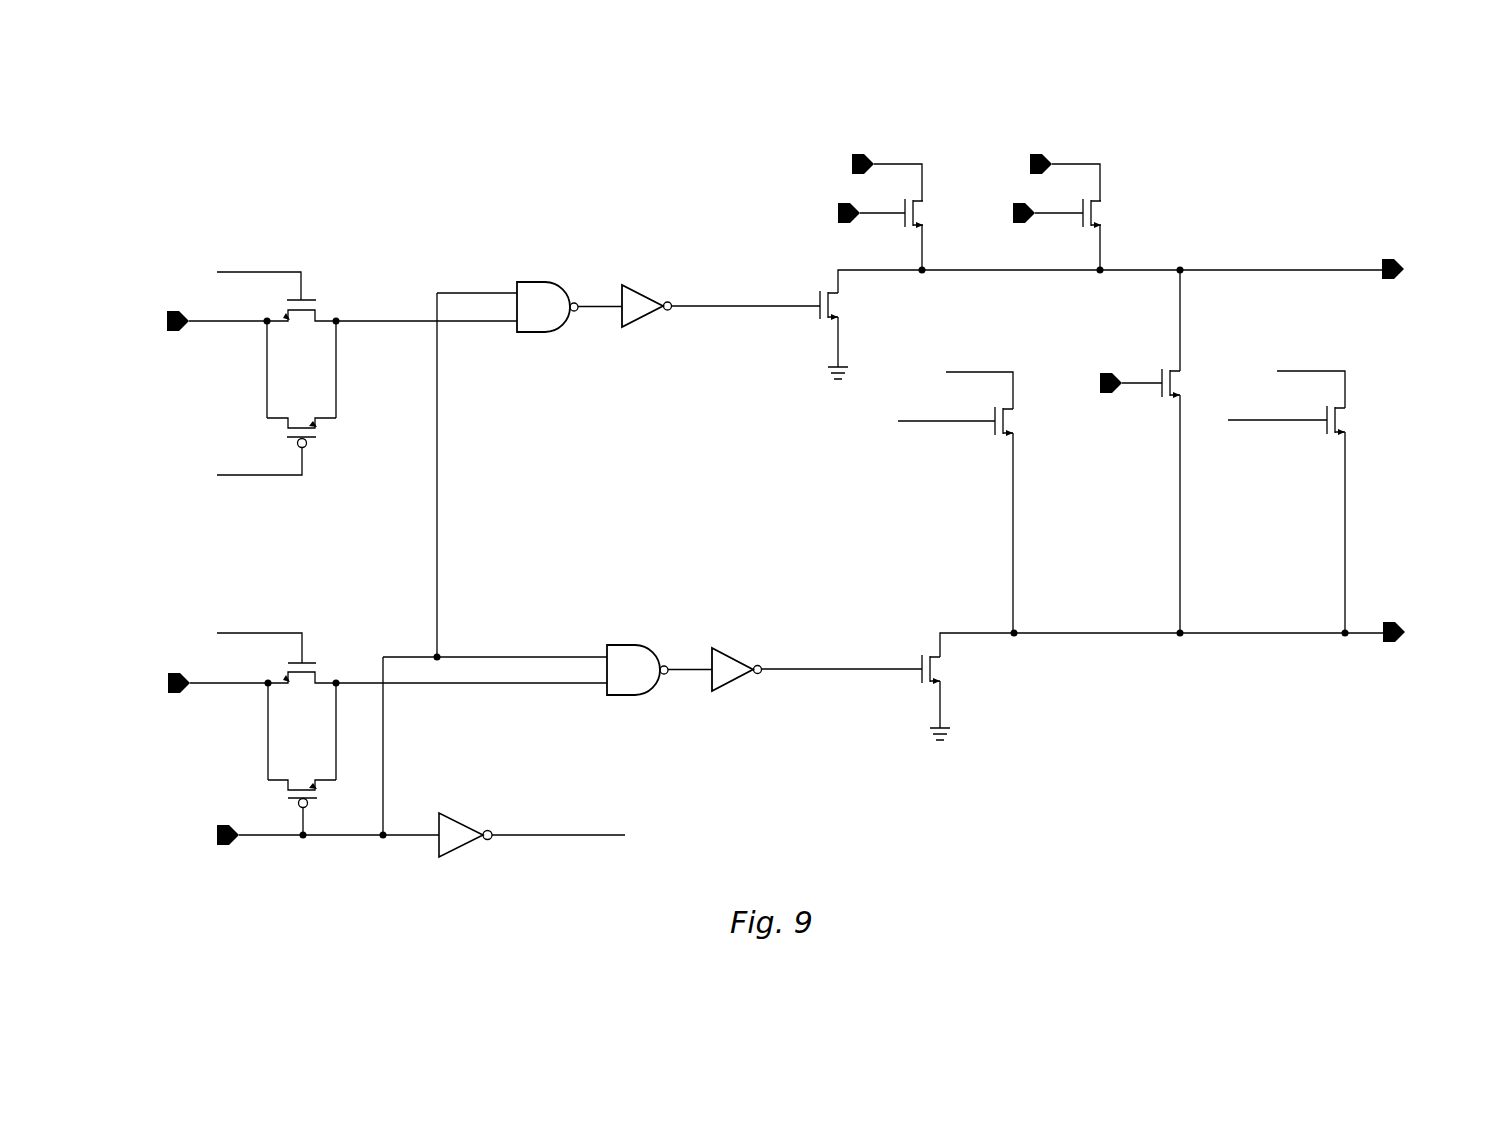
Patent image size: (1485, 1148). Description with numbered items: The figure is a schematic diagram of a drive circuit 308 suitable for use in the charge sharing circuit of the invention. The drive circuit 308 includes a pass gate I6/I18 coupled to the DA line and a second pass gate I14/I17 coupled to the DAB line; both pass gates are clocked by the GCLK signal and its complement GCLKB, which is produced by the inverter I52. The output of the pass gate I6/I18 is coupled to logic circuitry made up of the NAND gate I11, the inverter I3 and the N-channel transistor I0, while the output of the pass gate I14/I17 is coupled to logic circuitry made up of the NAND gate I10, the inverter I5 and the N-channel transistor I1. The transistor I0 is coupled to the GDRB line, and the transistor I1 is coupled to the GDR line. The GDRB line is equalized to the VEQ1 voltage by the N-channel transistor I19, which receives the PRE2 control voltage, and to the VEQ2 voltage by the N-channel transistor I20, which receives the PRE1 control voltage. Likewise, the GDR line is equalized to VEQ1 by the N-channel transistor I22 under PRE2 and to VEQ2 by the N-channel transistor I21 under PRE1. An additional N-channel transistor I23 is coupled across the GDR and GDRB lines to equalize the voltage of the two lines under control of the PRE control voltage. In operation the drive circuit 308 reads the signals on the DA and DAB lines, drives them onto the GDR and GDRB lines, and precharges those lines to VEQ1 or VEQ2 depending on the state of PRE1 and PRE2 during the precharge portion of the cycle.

The drive circuit 308 is at (163, 115).
The pass gate transistor I6 is at (300, 303).
The pass gate transistor I18 is at (308, 441).
The pass gate transistor I14 is at (295, 665).
The pass gate transistor I17 is at (309, 802).
The inverter I52 is at (453, 823).
The NAND gate I11 is at (537, 294).
The inverter I3 is at (643, 291).
The NAND gate I10 is at (626, 658).
The inverter I5 is at (732, 656).
The N-channel transistor I0 is at (816, 314).
The N-channel transistor I19 is at (898, 222).
The N-channel transistor I20 is at (1075, 222).
The N-channel transistor I22 is at (988, 428).
The N-channel transistor I23 is at (1155, 391).
The N-channel transistor I21 is at (1319, 428).
The N-channel transistor I1 is at (921, 661).